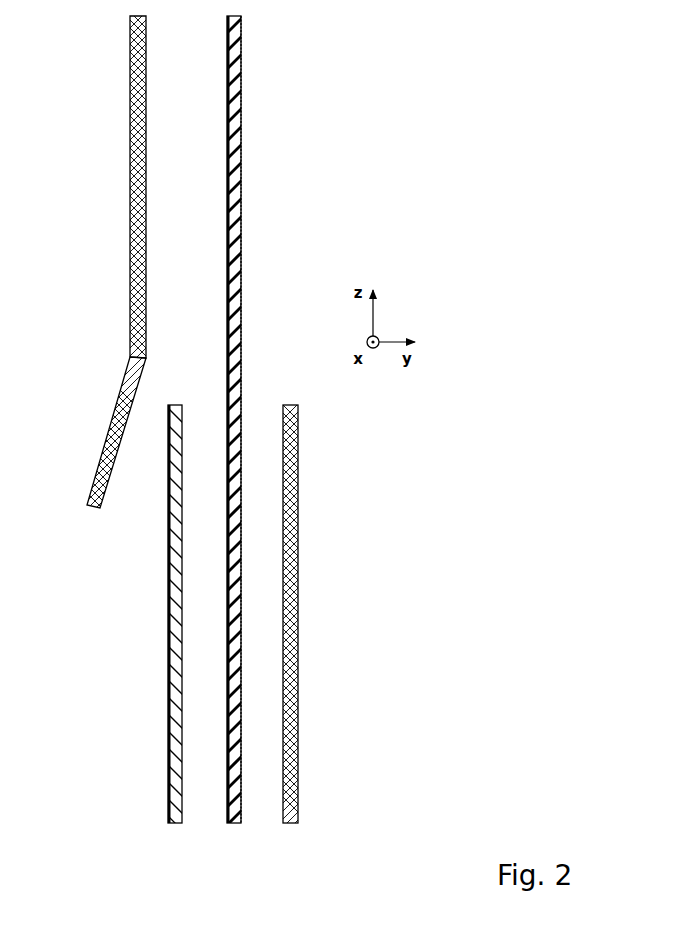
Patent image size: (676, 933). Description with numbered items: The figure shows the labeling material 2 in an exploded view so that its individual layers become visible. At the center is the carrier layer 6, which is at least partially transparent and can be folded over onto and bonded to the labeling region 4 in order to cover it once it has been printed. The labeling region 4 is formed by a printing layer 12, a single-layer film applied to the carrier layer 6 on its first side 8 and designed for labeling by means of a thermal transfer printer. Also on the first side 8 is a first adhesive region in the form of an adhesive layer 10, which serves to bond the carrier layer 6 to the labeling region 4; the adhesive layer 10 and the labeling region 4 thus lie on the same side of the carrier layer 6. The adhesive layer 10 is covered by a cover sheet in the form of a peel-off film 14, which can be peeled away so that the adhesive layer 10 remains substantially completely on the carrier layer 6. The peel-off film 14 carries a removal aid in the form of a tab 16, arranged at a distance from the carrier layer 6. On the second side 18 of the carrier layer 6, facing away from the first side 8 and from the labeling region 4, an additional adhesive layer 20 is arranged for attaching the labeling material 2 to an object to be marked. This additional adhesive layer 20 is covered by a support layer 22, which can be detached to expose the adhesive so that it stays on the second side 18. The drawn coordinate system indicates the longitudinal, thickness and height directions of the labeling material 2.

The labeling material 2 is at (98, 53).
The labeling region 4 is at (168, 607).
The carrier layer 6 is at (235, 133).
The first side 8 is at (226, 162).
The adhesive layer 10 is at (227, 200).
The printing layer 12 is at (177, 707).
The peel-off film 14 is at (132, 263).
The tab 16 is at (112, 422).
The second side 18 is at (243, 558).
The additional adhesive layer 20 is at (242, 653).
The support layer 22 is at (297, 667).